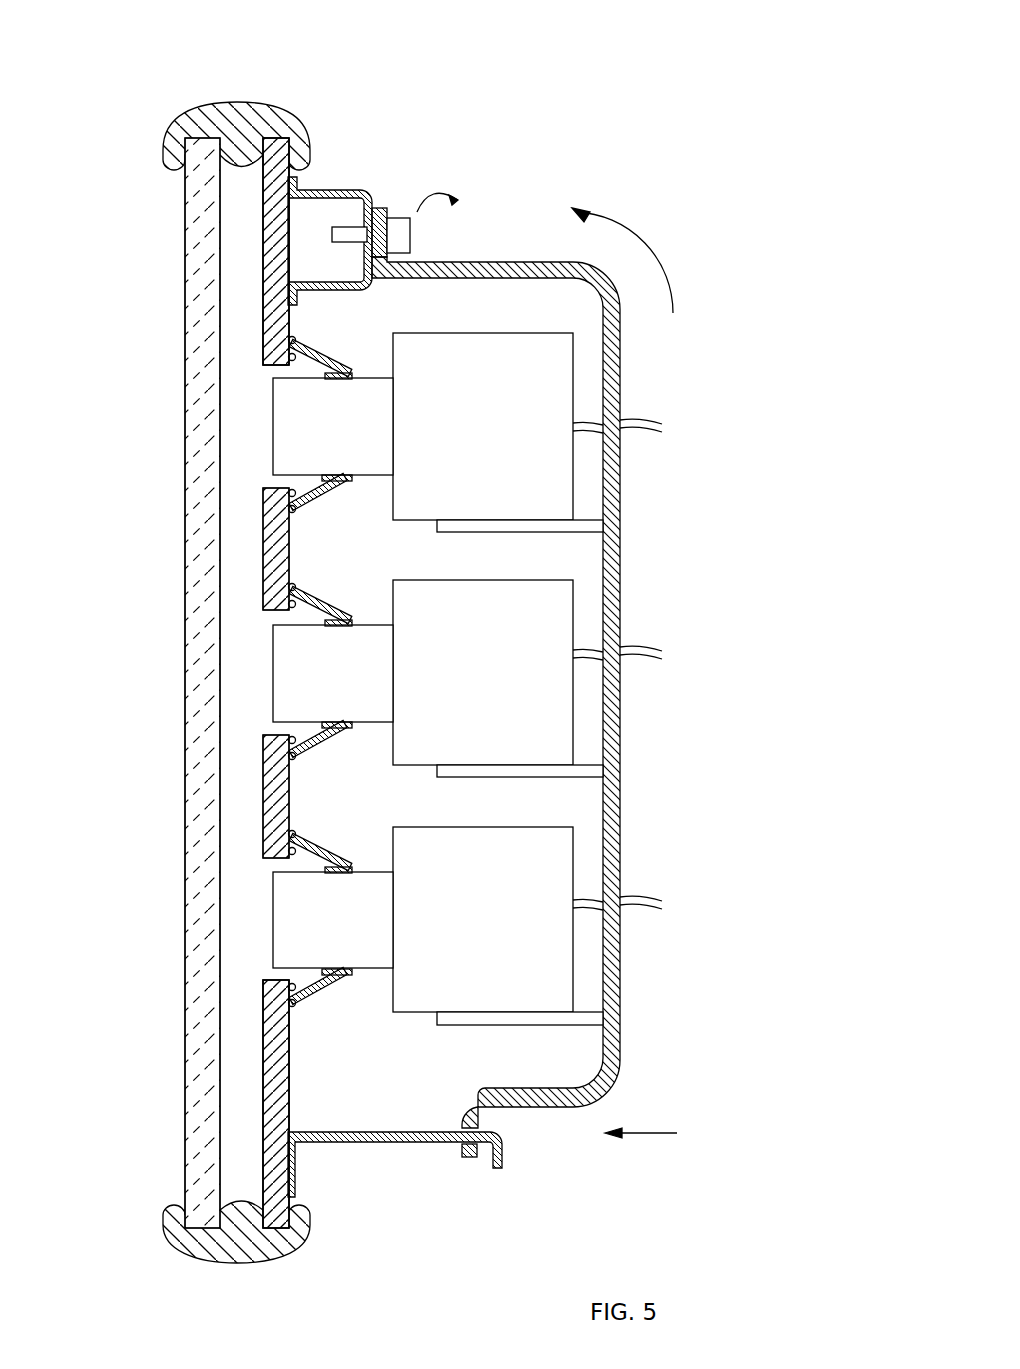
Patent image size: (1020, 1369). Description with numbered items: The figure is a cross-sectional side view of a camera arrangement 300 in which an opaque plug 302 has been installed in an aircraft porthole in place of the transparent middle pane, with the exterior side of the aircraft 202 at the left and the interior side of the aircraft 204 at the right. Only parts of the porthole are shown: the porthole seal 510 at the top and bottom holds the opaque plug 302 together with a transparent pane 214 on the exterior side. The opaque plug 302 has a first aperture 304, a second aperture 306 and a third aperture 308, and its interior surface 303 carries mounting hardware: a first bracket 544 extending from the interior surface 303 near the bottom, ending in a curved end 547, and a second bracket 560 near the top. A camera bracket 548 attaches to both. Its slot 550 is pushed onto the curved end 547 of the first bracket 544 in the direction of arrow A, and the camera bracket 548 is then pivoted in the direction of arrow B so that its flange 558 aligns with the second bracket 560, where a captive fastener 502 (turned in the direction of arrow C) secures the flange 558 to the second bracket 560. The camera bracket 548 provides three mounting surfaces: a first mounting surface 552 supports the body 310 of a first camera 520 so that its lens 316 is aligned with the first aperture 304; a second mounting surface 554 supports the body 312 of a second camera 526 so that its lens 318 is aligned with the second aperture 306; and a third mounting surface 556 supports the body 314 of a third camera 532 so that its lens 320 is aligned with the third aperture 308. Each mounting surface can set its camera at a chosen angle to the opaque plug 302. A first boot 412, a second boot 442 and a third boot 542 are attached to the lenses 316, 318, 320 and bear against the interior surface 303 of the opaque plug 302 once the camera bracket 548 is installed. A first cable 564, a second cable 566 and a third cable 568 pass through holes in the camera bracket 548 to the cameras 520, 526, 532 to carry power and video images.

The camera arrangement 300 is at (176, 44).
The exterior side of the aircraft 202 is at (101, 741).
The interior side of the aircraft 204 is at (833, 741).
The glass panel 214 is at (196, 1148).
The opaque plug 302 is at (290, 1092).
The interior surface 303 is at (290, 1049).
The first aperture 304 is at (272, 374).
The second bracket segment 306 is at (272, 620).
The third aperture 308 is at (272, 866).
The body of the first camera 310 is at (537, 347).
The body of the second camera 312 is at (471, 592).
The body of the third camera 314 is at (471, 838).
The lens of the first camera 316 is at (372, 394).
The lens of the second camera 318 is at (372, 640).
The lens of the third camera 320 is at (372, 886).
The first boot 412 is at (323, 352).
The second boot 442 is at (323, 600).
The fastener 502 is at (404, 236).
The porthole seal 510 is at (285, 112).
The first camera 520 is at (443, 326).
The second camera 526 is at (420, 572).
The third camera 532 is at (420, 819).
The third boot 542 is at (323, 846).
The first bracket 544 is at (395, 1142).
The lower fastener 547 is at (503, 1158).
The camera bracket 548 is at (622, 1044).
The slot 550 is at (478, 1128).
The first mounting surface 552 is at (545, 532).
The second mounting surface 554 is at (545, 778).
The third mounting surface 556 is at (480, 1026).
The flange 558 is at (390, 208).
The second bracket 560 is at (345, 192).
The first cable 564 is at (662, 424).
The second cable 566 is at (662, 651).
The third cable 568 is at (662, 901).